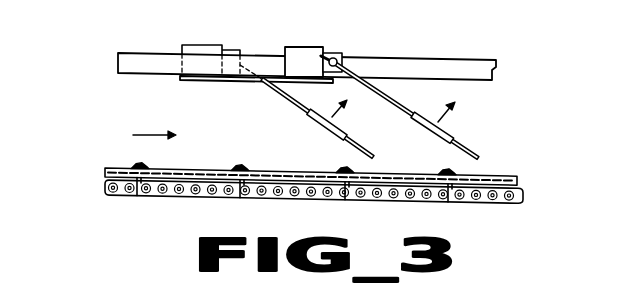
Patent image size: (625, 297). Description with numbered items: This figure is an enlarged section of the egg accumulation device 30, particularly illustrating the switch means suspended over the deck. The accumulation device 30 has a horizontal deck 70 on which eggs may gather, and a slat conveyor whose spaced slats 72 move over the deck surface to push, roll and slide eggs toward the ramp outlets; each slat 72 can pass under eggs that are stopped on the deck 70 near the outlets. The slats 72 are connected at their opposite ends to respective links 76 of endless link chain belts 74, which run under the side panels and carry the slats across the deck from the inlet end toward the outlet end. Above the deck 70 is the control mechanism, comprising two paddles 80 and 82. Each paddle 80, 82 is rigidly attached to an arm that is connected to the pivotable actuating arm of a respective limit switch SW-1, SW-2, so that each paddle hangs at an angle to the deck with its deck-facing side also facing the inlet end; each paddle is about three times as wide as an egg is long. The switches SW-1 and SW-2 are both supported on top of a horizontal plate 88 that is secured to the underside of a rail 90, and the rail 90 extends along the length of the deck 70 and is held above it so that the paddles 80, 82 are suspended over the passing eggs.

The accumulation device 30 is at (111, 166).
The horizontal deck 70 is at (500, 176).
The slats 72 is at (240, 165).
The endless link chain belts 74 is at (105, 188).
The links 76 is at (240, 198).
The paddle 80 is at (458, 139).
The paddle 82 is at (352, 139).
The horizontal plate 88 is at (200, 81).
The rail 90 is at (426, 64).
The limit switch SW-1 is at (307, 47).
The limit switch SW-2 is at (199, 45).